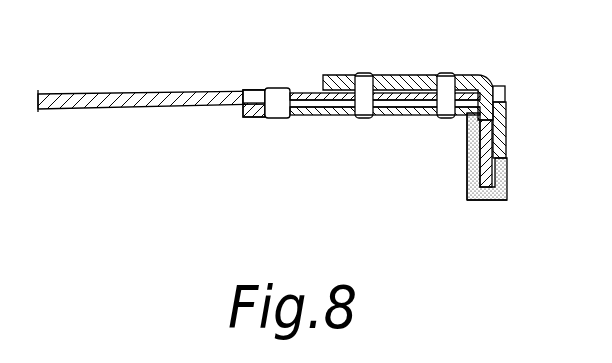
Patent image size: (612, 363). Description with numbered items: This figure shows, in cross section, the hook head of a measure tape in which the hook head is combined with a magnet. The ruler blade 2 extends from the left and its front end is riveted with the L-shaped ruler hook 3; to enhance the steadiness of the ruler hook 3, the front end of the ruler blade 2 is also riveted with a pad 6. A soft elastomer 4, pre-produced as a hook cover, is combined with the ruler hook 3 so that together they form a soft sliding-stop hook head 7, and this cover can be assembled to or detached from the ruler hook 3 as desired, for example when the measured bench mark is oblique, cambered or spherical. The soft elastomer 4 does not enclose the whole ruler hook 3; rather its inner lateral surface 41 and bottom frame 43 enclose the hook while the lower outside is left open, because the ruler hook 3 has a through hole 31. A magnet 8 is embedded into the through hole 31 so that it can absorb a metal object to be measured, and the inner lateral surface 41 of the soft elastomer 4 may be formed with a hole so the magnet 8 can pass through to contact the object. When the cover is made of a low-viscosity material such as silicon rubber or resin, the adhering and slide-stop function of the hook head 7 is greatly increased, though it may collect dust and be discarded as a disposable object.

The ruler blade 2 is at (203, 93).
The ruler hook 3 is at (402, 75).
The soft elastomer 4 is at (508, 180).
The pad 6 is at (322, 114).
The hook head 7 is at (518, 68).
The magnet 8 is at (507, 113).
The through hole 31 is at (506, 140).
The inner lateral surface 41 is at (466, 160).
The bottom frame 43 is at (483, 200).